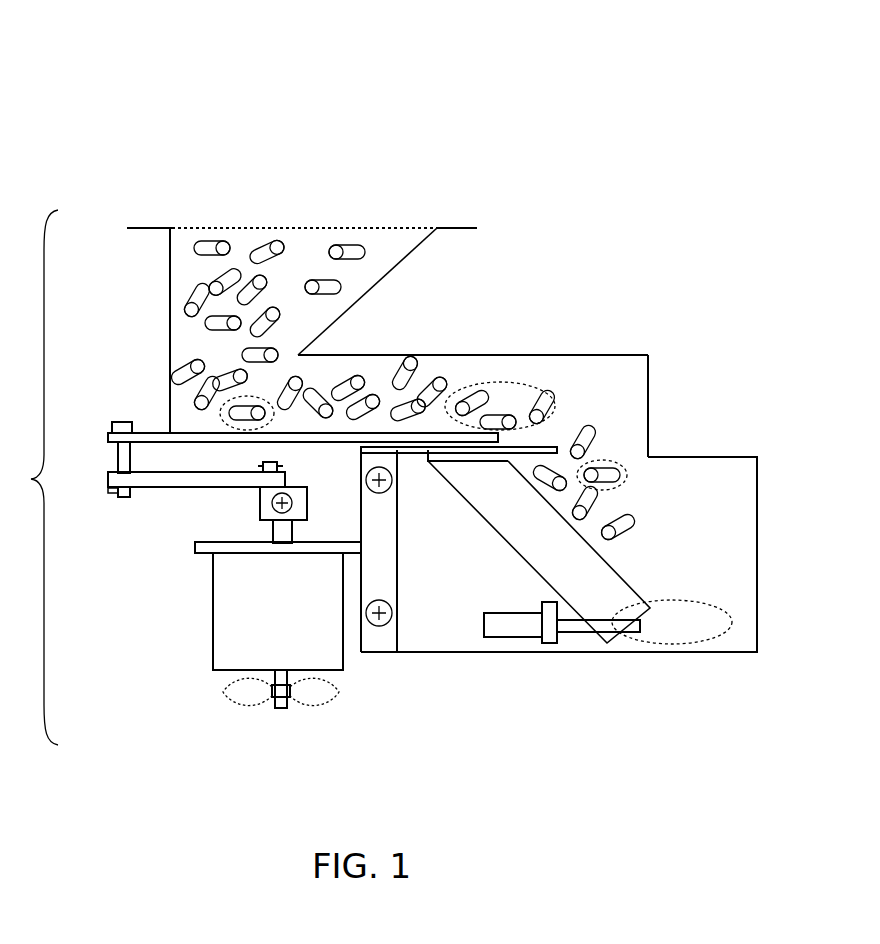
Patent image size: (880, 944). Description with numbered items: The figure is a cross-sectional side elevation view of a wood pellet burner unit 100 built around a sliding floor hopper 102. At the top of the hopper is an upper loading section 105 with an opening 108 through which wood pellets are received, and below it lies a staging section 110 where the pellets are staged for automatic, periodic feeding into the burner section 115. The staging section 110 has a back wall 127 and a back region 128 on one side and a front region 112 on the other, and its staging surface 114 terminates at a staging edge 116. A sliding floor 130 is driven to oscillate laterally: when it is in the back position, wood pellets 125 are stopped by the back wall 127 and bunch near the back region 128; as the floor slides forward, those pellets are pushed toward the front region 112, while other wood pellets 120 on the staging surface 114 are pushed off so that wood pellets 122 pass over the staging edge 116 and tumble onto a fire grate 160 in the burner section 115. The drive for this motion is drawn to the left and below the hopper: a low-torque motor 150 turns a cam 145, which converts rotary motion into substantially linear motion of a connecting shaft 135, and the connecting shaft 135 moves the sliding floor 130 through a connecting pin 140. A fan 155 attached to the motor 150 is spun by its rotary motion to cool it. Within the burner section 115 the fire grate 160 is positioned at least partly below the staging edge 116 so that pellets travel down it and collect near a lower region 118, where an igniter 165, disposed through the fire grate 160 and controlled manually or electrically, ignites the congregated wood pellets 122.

The wood pellet burner unit 100 is at (82, 106).
The sliding floor hopper 102 is at (29, 477).
The upper loading section 105 is at (405, 262).
The opening 108 is at (288, 298).
The staging section 110 is at (465, 355).
The front region 112 is at (620, 368).
The staging surface 114 is at (545, 447).
The burner section 115 is at (660, 457).
The staging edge 116 is at (548, 443).
The lower region 118 is at (730, 612).
The wood pellets 120 is at (530, 385).
The wood pellets 122 is at (615, 470).
The wood pellets 125 is at (218, 413).
The back wall 127 is at (165, 372).
The back region 128 is at (178, 352).
The sliding floor 130 is at (323, 437).
The connecting shaft 135 is at (185, 487).
The connecting pin 140 is at (118, 466).
The cam 145 is at (262, 506).
The motor 150 is at (333, 658).
The fan 155 is at (252, 702).
The fire grate 160 is at (593, 583).
The igniter 165 is at (505, 628).